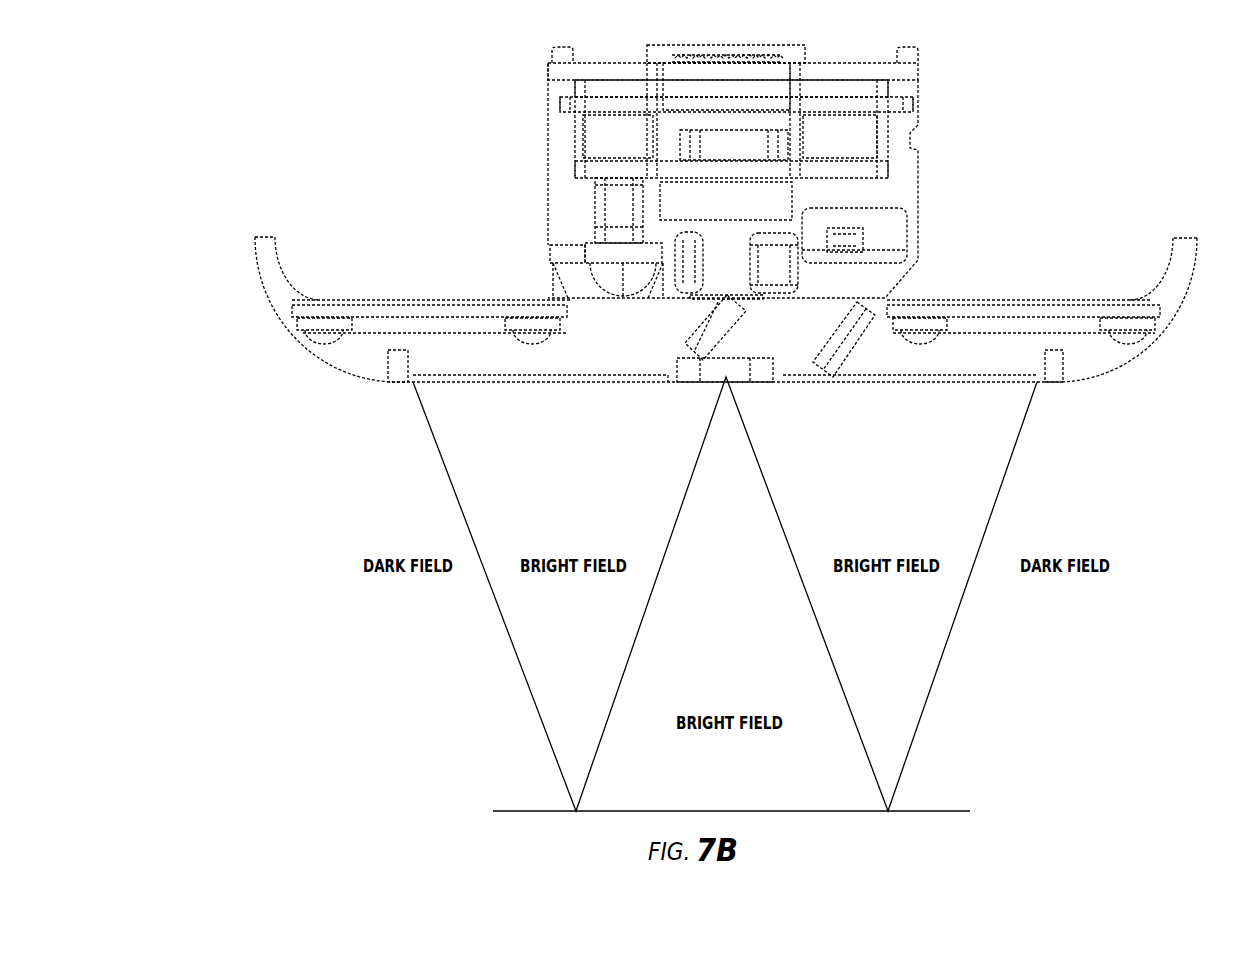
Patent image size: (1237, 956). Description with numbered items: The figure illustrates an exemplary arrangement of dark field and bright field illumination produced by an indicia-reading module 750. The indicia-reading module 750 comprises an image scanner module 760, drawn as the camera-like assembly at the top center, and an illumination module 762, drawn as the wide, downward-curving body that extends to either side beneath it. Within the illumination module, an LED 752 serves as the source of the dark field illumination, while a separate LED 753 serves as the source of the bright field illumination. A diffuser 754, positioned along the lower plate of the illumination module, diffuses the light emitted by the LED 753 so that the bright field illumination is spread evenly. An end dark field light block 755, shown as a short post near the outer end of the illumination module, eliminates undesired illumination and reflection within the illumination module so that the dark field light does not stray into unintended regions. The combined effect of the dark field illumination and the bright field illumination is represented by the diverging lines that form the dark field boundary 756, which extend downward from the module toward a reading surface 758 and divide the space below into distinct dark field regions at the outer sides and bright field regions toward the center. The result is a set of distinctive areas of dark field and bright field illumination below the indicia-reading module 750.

The indicia-reading module 750 is at (345, 118).
The LED 752 is at (323, 337).
The LED 753 is at (533, 310).
The diffuser 754 is at (483, 392).
The end dark field light block 755 is at (380, 374).
The dark field boundary 756 is at (509, 641).
The scan surface 758 is at (923, 818).
The image scanner module 760 is at (922, 120).
The illumination module 762 is at (1078, 297).